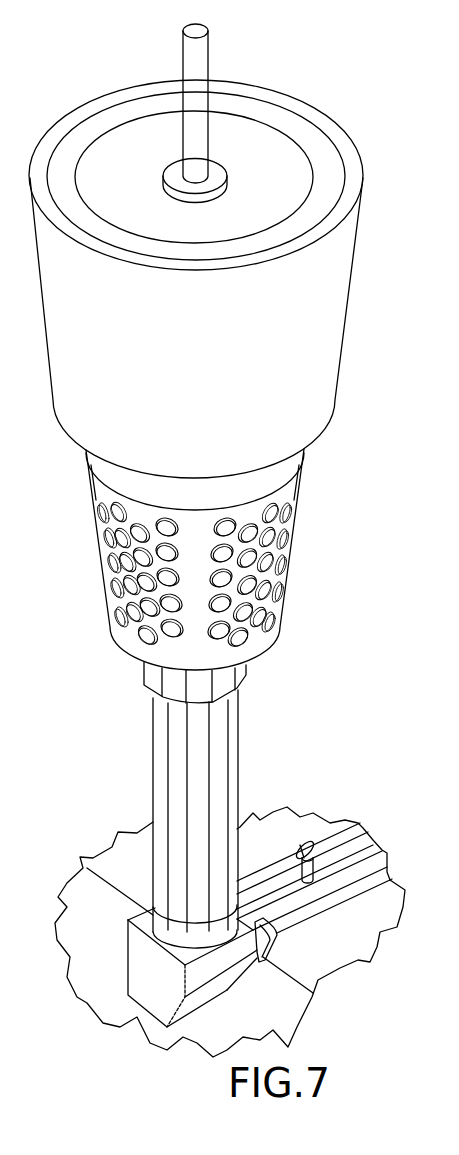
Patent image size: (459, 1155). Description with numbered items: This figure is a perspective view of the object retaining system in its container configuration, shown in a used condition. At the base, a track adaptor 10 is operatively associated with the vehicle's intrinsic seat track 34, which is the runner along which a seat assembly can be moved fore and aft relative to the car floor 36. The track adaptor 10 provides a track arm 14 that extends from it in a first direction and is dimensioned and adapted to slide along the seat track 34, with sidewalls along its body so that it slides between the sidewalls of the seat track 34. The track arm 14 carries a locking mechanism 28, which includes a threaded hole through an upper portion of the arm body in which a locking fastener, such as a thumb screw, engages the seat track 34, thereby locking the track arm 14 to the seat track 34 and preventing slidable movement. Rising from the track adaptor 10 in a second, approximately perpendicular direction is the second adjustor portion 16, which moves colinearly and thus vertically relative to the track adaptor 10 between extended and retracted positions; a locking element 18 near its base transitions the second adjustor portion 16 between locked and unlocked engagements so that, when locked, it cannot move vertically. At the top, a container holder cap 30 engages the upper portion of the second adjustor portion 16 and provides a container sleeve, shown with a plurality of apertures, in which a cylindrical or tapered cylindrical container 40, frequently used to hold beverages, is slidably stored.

The track adaptor 10 is at (244, 932).
The track arm 14 is at (332, 868).
The second adjustor portion 16 is at (160, 808).
The locking element 18 is at (158, 918).
The locking mechanism 28 is at (312, 842).
The container holder cap 30 is at (245, 665).
The seat track 34 is at (345, 890).
The car floor 36 is at (318, 965).
The container 40 is at (327, 373).